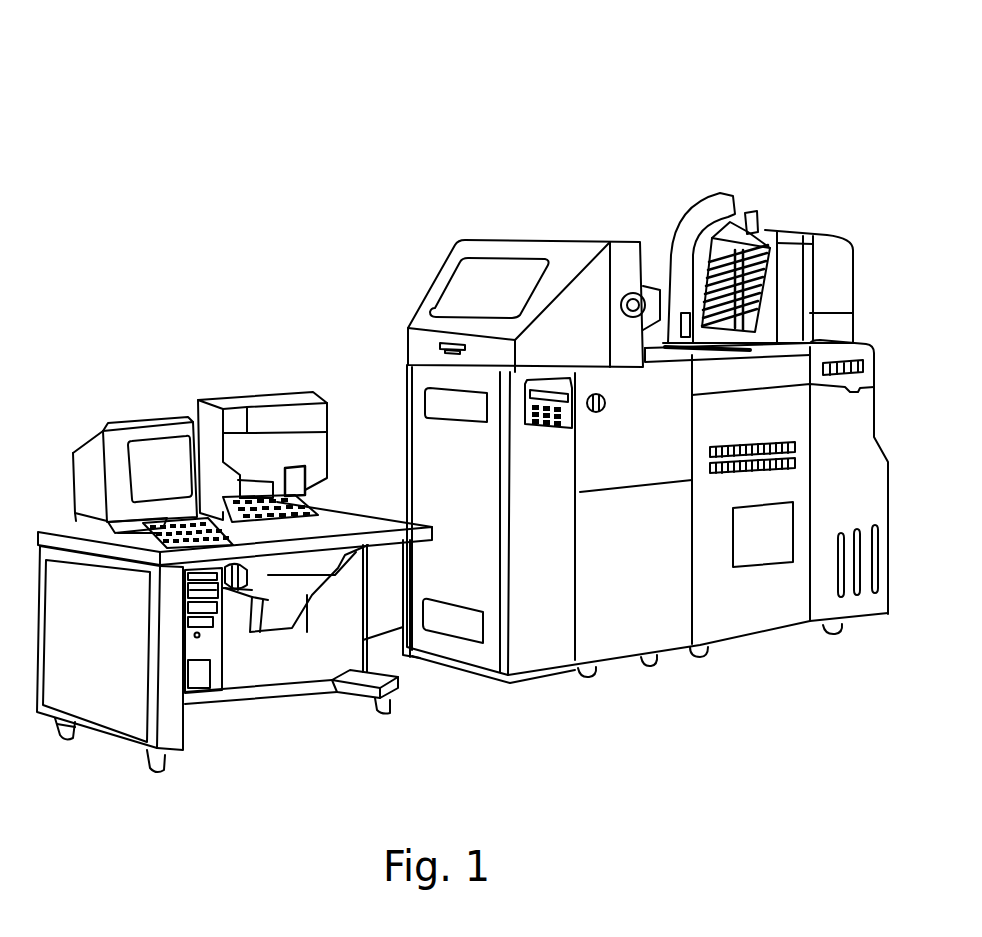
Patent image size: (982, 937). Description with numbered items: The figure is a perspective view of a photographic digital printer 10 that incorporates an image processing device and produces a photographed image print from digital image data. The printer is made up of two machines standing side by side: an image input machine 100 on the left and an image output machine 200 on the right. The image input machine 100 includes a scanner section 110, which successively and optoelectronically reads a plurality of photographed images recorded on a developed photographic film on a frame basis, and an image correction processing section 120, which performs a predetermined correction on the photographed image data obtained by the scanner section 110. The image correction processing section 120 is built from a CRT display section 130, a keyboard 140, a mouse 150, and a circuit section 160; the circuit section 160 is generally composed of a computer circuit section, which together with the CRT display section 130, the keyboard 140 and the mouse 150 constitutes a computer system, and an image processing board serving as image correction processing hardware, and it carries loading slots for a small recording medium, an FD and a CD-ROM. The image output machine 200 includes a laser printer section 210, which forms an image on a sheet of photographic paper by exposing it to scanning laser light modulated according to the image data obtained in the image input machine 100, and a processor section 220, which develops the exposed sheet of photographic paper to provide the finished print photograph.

The photographic digital printer 10 is at (460, 70).
The image input machine 100 is at (241, 302).
The scanner section 110 is at (293, 386).
The image correction processing section 120 is at (133, 398).
The CRT display section 130 is at (88, 458).
The keyboard 140 is at (145, 543).
The mouse 150 is at (268, 547).
The circuit section 160 is at (198, 653).
The image output machine 200 is at (776, 140).
The laser printer section 210 is at (572, 273).
The processor section 220 is at (790, 397).